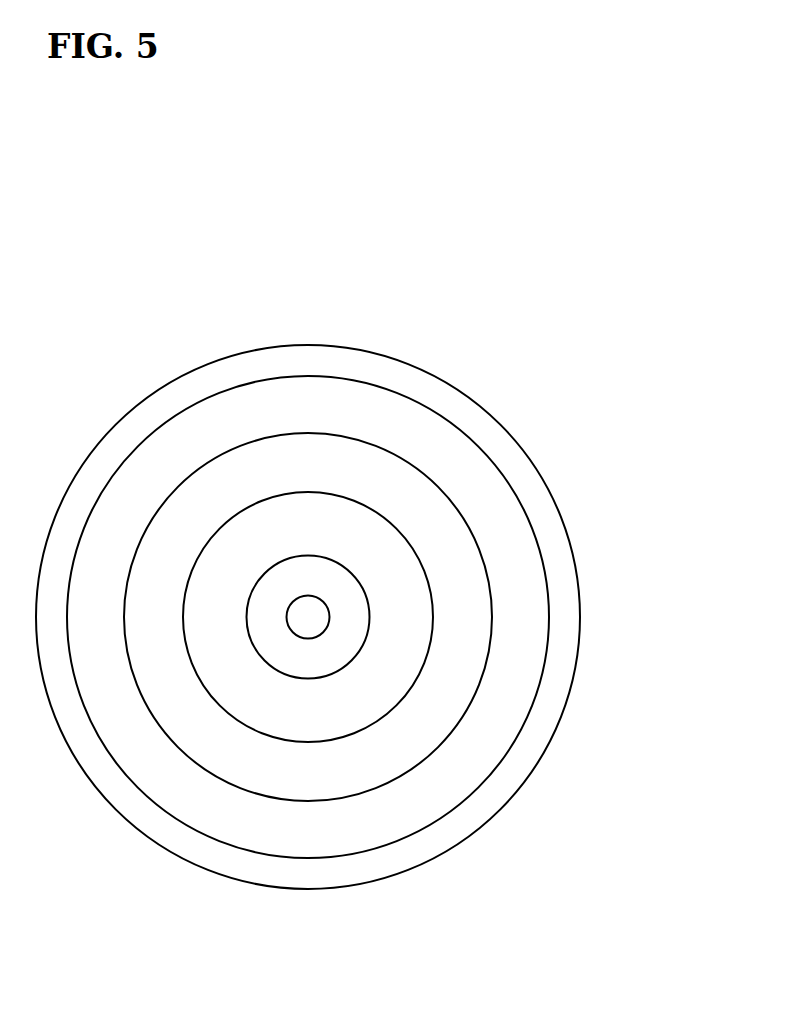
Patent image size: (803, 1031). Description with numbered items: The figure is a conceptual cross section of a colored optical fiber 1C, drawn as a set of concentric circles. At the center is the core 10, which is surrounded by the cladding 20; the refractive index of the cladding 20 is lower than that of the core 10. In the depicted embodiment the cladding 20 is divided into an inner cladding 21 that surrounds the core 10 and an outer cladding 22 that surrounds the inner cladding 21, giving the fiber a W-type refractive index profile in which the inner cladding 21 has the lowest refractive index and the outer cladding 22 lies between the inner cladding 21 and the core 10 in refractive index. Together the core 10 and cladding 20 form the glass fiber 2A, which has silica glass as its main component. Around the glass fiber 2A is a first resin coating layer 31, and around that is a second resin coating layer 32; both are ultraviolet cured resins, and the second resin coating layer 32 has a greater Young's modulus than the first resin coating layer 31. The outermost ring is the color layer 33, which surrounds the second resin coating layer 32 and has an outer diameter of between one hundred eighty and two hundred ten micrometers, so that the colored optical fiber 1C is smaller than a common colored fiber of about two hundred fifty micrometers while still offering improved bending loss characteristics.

The colored optical fiber 1C is at (485, 366).
The core 10 is at (315, 613).
The cladding 20 is at (630, 595).
The inner cladding 21 is at (348, 612).
The outer cladding 22 is at (410, 638).
The glass fiber 2A is at (666, 557).
The first resin coating layer 31 is at (470, 672).
The second resin coating layer 32 is at (502, 713).
The color layer 33 is at (525, 758).